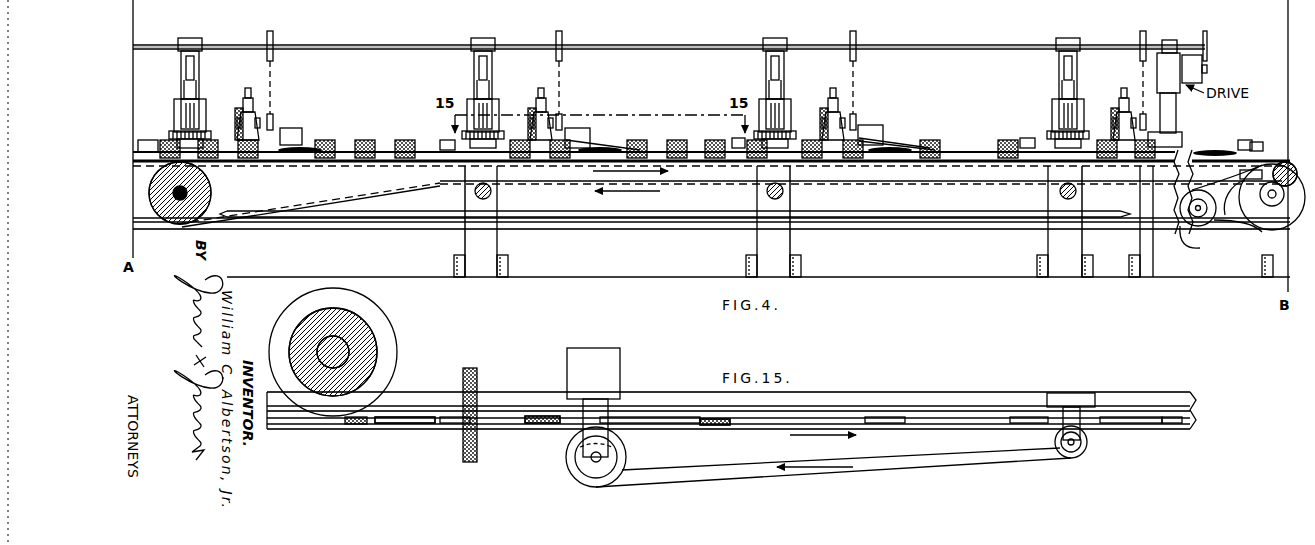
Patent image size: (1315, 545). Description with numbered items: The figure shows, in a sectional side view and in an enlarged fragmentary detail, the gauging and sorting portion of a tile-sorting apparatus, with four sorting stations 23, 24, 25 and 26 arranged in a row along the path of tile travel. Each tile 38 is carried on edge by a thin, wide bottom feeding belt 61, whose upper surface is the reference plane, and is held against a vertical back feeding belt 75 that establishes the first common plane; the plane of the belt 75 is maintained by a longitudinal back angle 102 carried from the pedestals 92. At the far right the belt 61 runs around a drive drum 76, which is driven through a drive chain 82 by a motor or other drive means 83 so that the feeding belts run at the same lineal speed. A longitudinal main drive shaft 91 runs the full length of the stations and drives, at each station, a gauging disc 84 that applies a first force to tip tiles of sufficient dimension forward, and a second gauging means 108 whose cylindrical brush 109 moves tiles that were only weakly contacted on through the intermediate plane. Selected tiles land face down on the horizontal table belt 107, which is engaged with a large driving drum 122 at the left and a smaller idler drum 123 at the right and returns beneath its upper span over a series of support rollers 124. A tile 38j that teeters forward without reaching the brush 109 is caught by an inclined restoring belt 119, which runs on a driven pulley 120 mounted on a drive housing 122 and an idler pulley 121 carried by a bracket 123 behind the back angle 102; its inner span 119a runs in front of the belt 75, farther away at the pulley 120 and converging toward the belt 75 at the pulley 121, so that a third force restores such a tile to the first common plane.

In FIG. 4, the sorting station 23 is at (220, 30).
In FIG. 4, the sorting station 24 is at (503, 32).
In FIG. 4, the sorting station 25 is at (800, 33).
In FIG. 4, the sorting station 26 is at (1088, 35).
In FIG. 4, the tile 38 is at (548, 163).
In FIG. 15, the tile 38 is at (430, 420).
In FIG. 15, the tile 38j is at (522, 426).
In FIG. 4, the feeding belt 61 is at (140, 233).
In FIG. 15, the feeding belt 61 is at (1200, 425).
In FIG. 4, the feeding belt 75 is at (1280, 152).
In FIG. 15, the feeding belt 75 is at (878, 405).
In FIG. 4, the drive drum 76 is at (1272, 232).
In FIG. 4, the drive chain 82 is at (1236, 228).
In FIG. 4, the drive means 83 is at (1196, 230).
In FIG. 4, the gauging disc 84 is at (172, 132).
In FIG. 15, the gauging disc 84 is at (398, 357).
In FIG. 4, the main drive shaft 91 is at (662, 45).
In FIG. 4, the pedestal 92 is at (499, 246).
In FIG. 15, the back angle 102 is at (944, 392).
In FIG. 4, the table belt 107 is at (375, 170).
In FIG. 4, the second gauging means 108 is at (278, 108).
In FIG. 4, the cylindrical brush 109 is at (238, 108).
In FIG. 15, the cylindrical brush 109 is at (476, 368).
In FIG. 4, the restoring belt 119 is at (918, 138).
In FIG. 15, the restoring belt 119 is at (864, 478).
In FIG. 15, the inner span 119a is at (698, 432).
In FIG. 15, the driven pulley 120 is at (627, 455).
In FIG. 15, the idler pulley 121 is at (1056, 442).
In FIG. 4, the drive housing 122 is at (211, 195).
In FIG. 15, the drive housing 122 is at (620, 372).
In FIG. 4, the bracket 123 is at (1242, 174).
In FIG. 15, the bracket 123 is at (1060, 393).
In FIG. 4, the support roller 124 is at (493, 192).